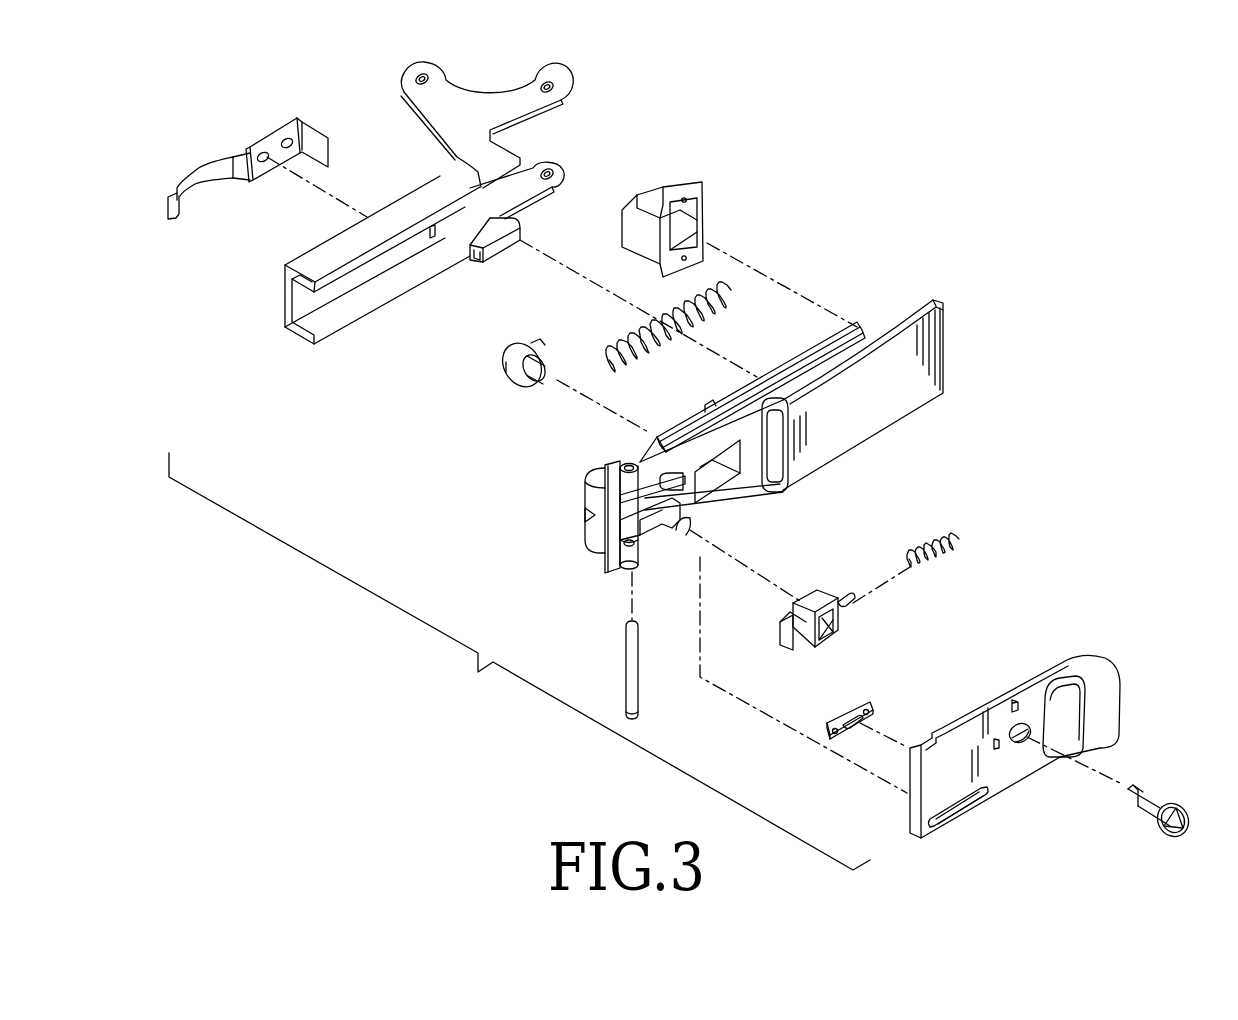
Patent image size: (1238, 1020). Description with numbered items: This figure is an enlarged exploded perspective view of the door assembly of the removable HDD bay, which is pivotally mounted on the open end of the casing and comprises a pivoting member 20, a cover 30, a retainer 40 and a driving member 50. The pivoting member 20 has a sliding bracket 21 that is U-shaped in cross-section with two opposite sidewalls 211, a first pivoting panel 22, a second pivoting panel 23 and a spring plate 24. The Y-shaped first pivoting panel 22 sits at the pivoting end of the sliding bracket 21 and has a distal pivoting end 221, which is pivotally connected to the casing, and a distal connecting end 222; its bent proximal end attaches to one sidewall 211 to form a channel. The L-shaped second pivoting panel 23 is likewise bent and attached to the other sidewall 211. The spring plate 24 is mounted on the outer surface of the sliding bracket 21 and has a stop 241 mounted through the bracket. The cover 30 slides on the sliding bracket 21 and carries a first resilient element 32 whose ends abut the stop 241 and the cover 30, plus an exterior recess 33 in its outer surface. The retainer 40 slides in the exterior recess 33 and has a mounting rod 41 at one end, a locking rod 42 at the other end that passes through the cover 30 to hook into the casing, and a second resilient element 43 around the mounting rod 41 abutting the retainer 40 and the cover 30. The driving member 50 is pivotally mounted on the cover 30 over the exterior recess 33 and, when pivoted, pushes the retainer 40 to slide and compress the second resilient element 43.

The pivoting member 20 is at (368, 341).
The sliding bracket 21 is at (356, 260).
The sidewalls 211 is at (316, 257).
The first pivoting panel 22 is at (520, 120).
The distal pivoting end 221 is at (551, 86).
The distal connecting end 222 is at (427, 80).
The second pivoting panel 23 is at (515, 191).
The spring plate 24 is at (255, 163).
The stop 241 is at (315, 142).
The cover 30 is at (771, 436).
The first resilient element 32 is at (718, 308).
The exterior recess 33 is at (672, 505).
The retainer 40 is at (848, 613).
The mounting rod 41 is at (850, 606).
The locking rod 42 is at (800, 639).
The second resilient element 43 is at (942, 560).
The driving member 50 is at (1012, 774).